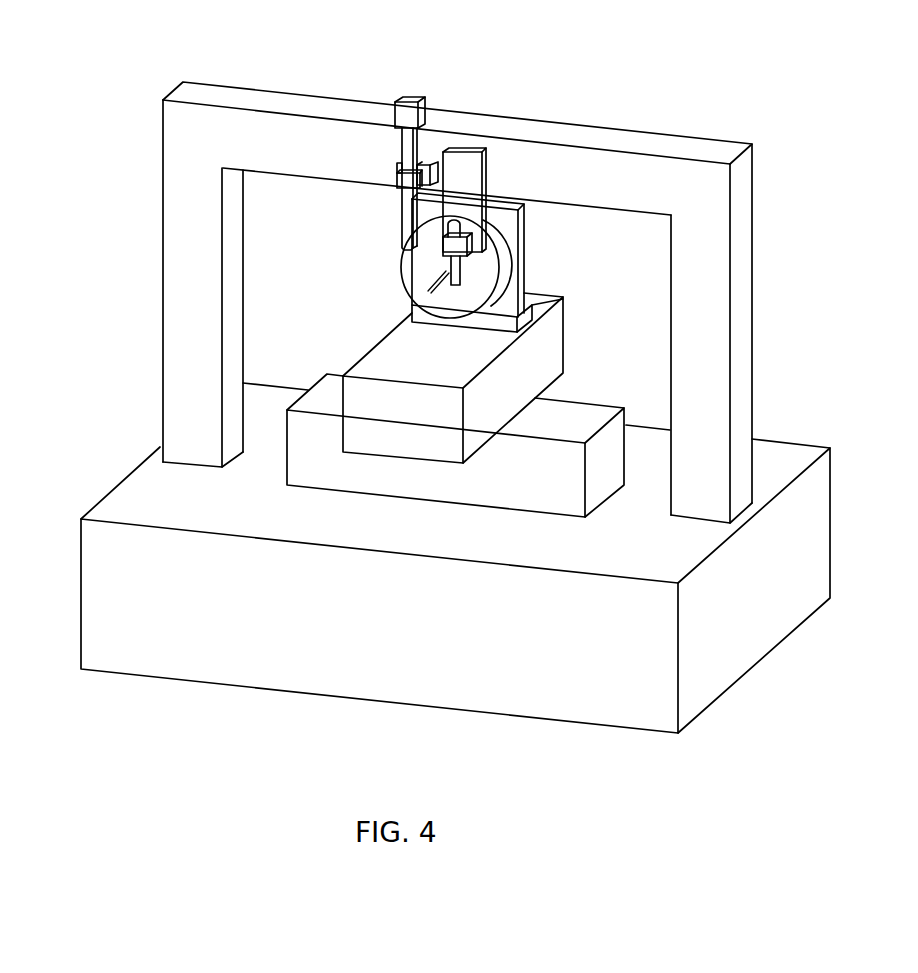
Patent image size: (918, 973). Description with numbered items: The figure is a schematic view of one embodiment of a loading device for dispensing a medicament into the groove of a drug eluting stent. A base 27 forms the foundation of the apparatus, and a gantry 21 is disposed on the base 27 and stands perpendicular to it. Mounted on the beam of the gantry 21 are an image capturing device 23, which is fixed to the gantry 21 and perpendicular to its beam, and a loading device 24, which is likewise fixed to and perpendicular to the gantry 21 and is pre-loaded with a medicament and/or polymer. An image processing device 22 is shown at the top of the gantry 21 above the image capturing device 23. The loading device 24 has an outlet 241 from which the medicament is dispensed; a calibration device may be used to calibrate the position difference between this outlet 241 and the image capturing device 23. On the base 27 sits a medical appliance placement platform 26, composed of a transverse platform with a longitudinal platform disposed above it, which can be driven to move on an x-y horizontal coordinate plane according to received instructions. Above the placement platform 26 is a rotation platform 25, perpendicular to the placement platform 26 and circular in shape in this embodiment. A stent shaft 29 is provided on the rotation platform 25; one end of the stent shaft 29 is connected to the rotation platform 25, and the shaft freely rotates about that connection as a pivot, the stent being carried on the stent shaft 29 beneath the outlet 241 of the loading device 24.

The gantry 21 is at (416, 302).
The image processing device 22 is at (384, 78).
The image capturing device 23 is at (259, 189).
The loading device 24 is at (575, 159).
The outlet 241 is at (461, 283).
The rotation platform 25 is at (297, 277).
The medical appliance placement platform 26 is at (335, 547).
The base 27 is at (455, 572).
The stent shaft 29 is at (266, 339).